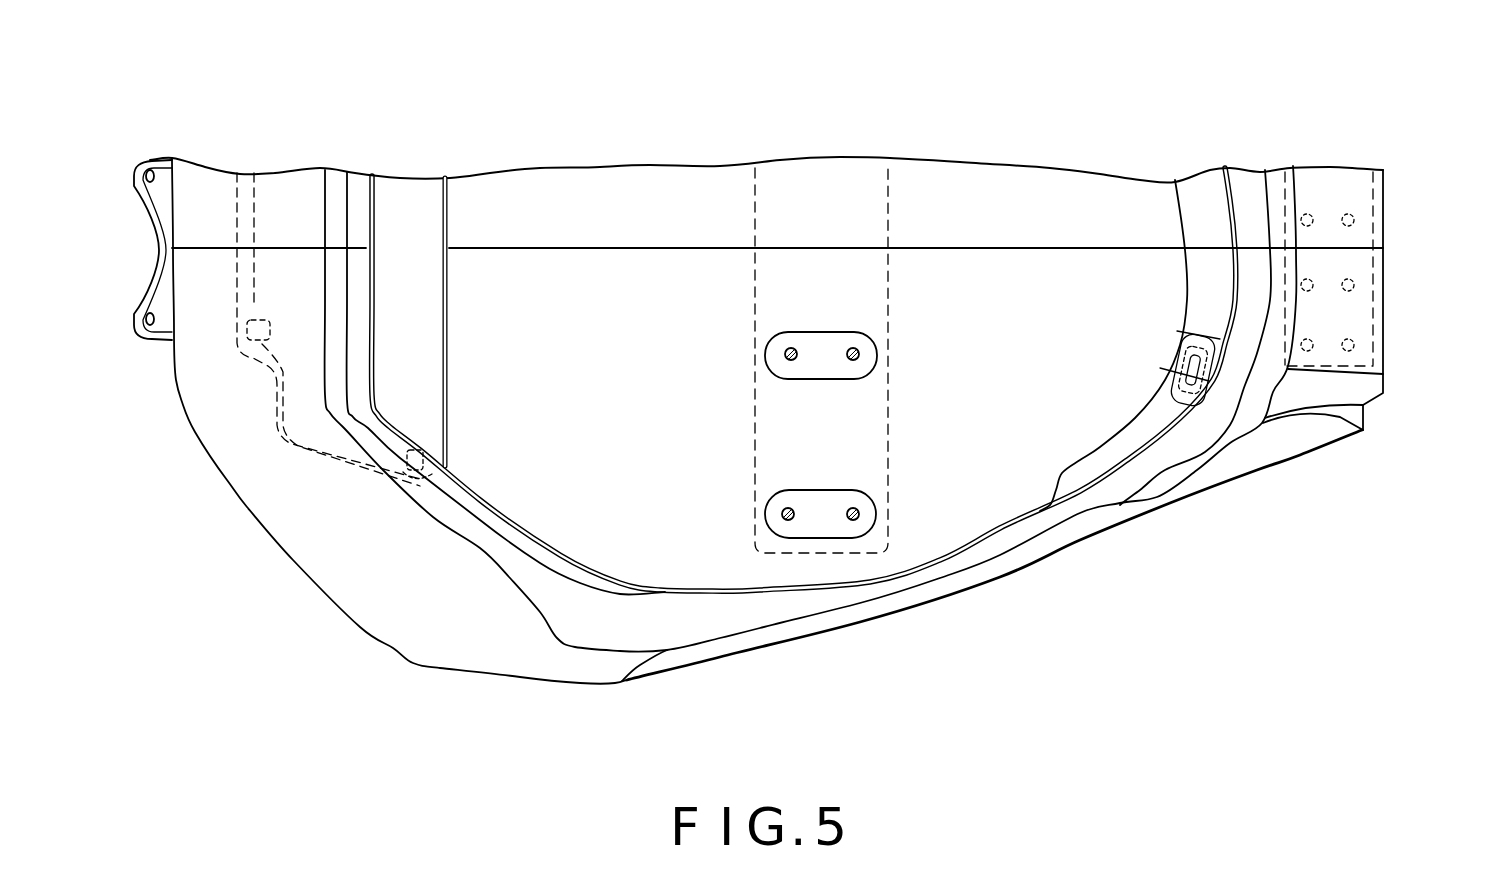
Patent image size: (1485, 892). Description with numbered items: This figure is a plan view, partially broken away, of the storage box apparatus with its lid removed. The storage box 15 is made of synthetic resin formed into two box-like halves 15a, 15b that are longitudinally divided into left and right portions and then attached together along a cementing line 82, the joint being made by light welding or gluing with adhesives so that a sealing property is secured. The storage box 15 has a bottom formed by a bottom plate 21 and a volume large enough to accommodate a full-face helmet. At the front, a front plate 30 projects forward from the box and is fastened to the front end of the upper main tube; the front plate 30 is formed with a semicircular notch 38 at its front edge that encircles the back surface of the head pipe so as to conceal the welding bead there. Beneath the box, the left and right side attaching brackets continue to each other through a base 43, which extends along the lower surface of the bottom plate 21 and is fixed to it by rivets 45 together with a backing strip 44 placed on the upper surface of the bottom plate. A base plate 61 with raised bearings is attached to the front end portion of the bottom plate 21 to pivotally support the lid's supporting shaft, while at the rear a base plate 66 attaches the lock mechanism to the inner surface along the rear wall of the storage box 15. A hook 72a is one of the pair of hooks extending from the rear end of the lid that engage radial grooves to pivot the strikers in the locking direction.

The storage box 15 is at (454, 648).
The box-like half 15a is at (1082, 286).
The box-like half 15b is at (988, 186).
The bottom plate 21 is at (677, 552).
The front plate 30 is at (166, 166).
The semicircular notch 38 is at (156, 236).
The base 43 is at (887, 489).
The backing strip 44 is at (825, 531).
The rivets 45 is at (857, 347).
The base plate 61 is at (402, 198).
The base plate 66 is at (1375, 221).
The hook 72a is at (1197, 377).
The cementing line 82 is at (586, 248).